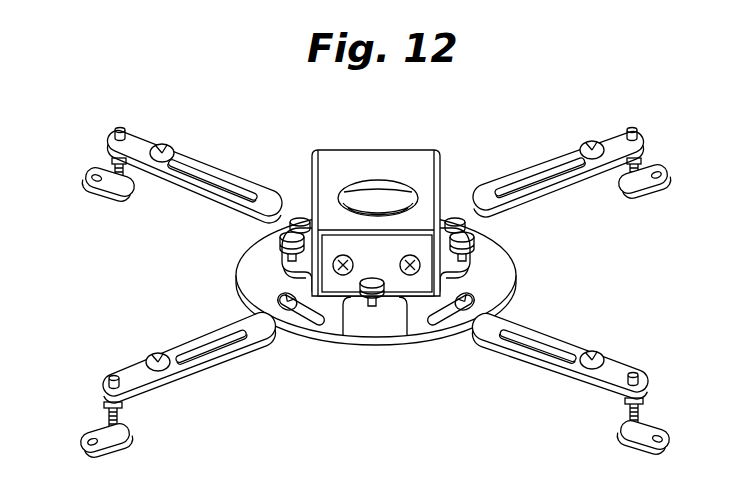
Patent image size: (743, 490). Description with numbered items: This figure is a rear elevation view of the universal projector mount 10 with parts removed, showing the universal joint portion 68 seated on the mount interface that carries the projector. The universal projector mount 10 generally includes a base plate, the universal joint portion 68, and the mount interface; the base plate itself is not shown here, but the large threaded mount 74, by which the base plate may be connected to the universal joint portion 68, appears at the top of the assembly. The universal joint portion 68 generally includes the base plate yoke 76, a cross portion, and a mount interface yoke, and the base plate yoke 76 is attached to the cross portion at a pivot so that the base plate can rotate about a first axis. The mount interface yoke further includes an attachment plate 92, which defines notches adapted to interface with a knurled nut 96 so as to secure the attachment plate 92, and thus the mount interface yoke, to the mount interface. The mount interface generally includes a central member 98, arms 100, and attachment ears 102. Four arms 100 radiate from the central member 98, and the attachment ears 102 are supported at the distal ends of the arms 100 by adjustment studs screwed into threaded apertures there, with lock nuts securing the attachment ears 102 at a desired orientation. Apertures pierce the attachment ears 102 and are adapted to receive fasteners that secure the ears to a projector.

The universal projector mount 10 is at (513, 73).
The universal joint portion 68 is at (446, 226).
The large threaded mount 74 is at (372, 175).
The base plate yoke 76 is at (328, 165).
The attachment plate 92 is at (342, 337).
The knurled nut 96 is at (474, 250).
The central member 98 is at (368, 331).
The arms 100 is at (557, 358).
The attachment ears 102 is at (86, 180).